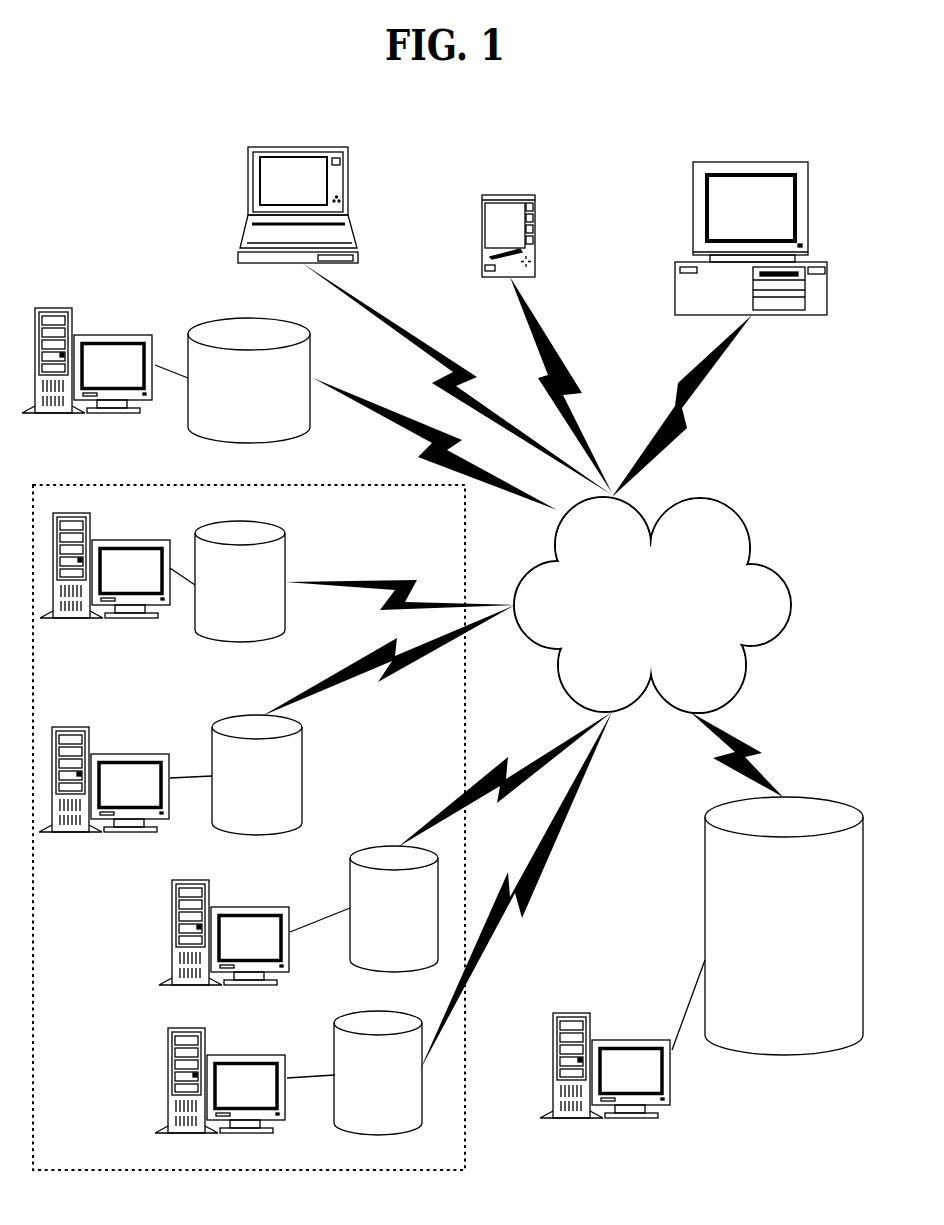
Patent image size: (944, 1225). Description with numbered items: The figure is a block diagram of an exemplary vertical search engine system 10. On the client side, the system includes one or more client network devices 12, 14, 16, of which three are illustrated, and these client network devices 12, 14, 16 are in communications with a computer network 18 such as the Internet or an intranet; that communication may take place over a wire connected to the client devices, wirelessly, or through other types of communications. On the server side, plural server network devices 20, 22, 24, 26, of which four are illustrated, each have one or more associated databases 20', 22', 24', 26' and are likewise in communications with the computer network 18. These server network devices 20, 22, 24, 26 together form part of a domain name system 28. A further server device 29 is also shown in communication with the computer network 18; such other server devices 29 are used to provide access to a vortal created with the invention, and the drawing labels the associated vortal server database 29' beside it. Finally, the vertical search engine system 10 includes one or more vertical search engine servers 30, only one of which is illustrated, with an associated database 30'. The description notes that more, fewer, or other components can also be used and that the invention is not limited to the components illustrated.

The vertical search engine system 10 is at (732, 87).
The client network device 12 is at (300, 147).
The client network device 14 is at (533, 196).
The client network device 16 is at (752, 162).
The computer network 18 is at (788, 608).
The server network device 20 is at (120, 557).
The database 20' is at (267, 576).
The server network device 22 is at (119, 767).
The database 22' is at (288, 775).
The server network device 24 is at (224, 919).
The database 24' is at (394, 886).
The server network device 26 is at (228, 1076).
The database 26' is at (375, 1059).
The domain name system 28 is at (255, 486).
The server device 29 is at (103, 352).
The vortal server database 29' is at (249, 362).
The vertical search engine server 30 is at (624, 1087).
The database 30' is at (786, 904).